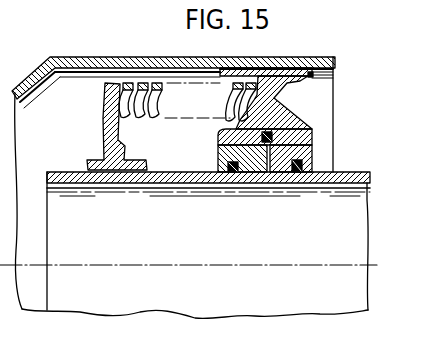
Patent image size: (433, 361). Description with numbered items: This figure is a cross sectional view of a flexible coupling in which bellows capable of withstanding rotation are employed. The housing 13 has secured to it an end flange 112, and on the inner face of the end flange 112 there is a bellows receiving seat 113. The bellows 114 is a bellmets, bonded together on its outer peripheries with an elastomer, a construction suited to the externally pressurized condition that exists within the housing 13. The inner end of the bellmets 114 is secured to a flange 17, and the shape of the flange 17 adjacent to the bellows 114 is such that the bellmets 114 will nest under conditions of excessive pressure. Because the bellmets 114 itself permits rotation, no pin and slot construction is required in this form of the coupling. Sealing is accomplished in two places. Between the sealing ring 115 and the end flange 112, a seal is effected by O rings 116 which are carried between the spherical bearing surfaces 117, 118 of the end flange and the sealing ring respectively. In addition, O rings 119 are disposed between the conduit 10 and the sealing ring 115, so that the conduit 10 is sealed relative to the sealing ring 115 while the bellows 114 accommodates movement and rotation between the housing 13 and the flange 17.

The conduit 10 is at (173, 190).
The housing 13 is at (177, 58).
The flange 17 is at (110, 131).
The end flange 112 is at (287, 82).
The bellows receiving seat 113 is at (274, 98).
The bellows 114 is at (158, 118).
The sealing ring 115 is at (312, 150).
The O rings 116 is at (267, 143).
The spherical bearing surface 117 is at (220, 141).
The spherical bearing surface 118 is at (312, 130).
The O rings 119 is at (235, 173).